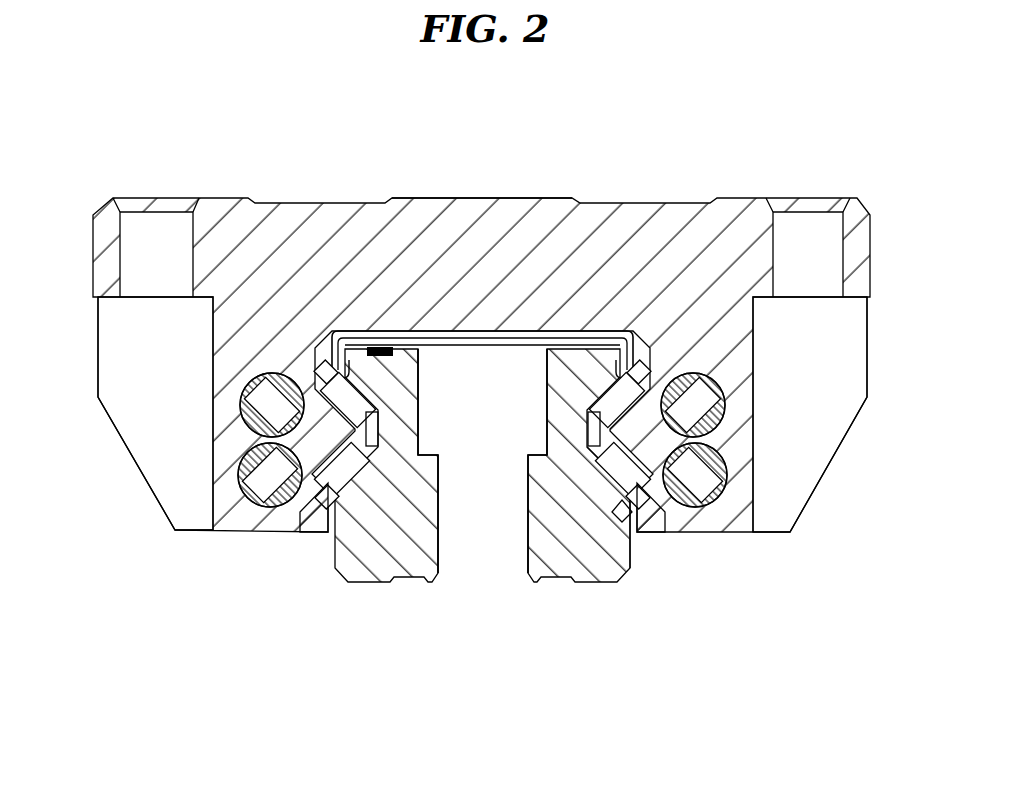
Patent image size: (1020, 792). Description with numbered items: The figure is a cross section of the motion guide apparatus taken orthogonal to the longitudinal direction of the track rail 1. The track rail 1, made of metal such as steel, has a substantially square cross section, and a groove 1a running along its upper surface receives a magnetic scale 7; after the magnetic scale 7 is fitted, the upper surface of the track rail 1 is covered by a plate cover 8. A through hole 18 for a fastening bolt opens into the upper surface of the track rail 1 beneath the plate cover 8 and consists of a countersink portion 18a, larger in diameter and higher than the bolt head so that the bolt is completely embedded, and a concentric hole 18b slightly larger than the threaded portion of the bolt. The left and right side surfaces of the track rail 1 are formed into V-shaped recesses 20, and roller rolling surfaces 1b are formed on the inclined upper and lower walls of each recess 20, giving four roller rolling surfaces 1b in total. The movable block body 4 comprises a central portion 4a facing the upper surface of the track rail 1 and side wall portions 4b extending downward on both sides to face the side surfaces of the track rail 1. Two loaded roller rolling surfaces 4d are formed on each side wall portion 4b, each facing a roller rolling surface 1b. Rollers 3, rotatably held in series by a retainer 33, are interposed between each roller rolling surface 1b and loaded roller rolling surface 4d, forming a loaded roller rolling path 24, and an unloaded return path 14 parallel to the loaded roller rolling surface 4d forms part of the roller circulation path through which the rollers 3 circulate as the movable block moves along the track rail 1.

The track rail 1 is at (537, 584).
The groove 1a is at (473, 345).
The roller rolling surface 1b is at (638, 350).
The roller 3 is at (337, 505).
The movable block body 4 is at (602, 200).
The central portion 4a is at (548, 242).
The side wall portion 4b is at (232, 403).
The loaded roller rolling surface 4d is at (633, 380).
The magnetic scale 7 is at (383, 345).
The plate cover 8 is at (535, 348).
The unloaded return path 14 is at (698, 423).
The through hole 18 is at (510, 686).
The countersink portion 18a is at (472, 450).
The hole 18b is at (447, 500).
The V-shaped recess 20 is at (578, 470).
The loaded roller rolling path 24 is at (630, 505).
The retainer 33 is at (322, 520).